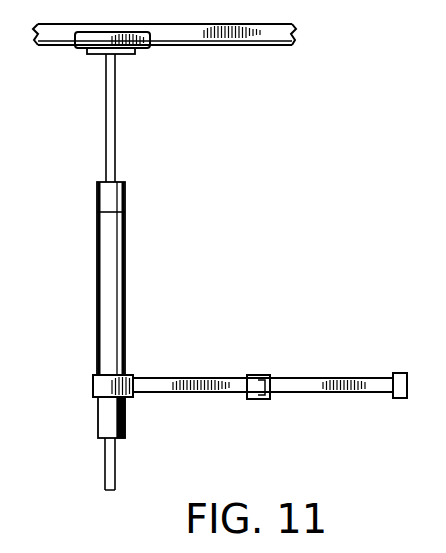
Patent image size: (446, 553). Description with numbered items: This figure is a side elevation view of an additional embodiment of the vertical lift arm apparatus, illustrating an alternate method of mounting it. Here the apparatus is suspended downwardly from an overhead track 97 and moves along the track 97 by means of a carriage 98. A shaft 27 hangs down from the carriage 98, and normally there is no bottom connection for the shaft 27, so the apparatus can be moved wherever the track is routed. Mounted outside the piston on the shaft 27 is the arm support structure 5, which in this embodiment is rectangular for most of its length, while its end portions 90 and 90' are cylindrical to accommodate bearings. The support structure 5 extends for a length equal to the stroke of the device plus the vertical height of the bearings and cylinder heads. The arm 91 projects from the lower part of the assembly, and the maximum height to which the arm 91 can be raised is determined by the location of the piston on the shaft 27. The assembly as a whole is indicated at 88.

The overhead track 97 is at (244, 46).
The carriage 98 is at (143, 49).
The shaft 27 is at (107, 133).
The end portion 90 is at (86, 269).
The arm support structure 5 is at (117, 280).
The positioning assembly 88 is at (125, 262).
The end portion 90' is at (83, 432).
The arm 91 is at (293, 382).